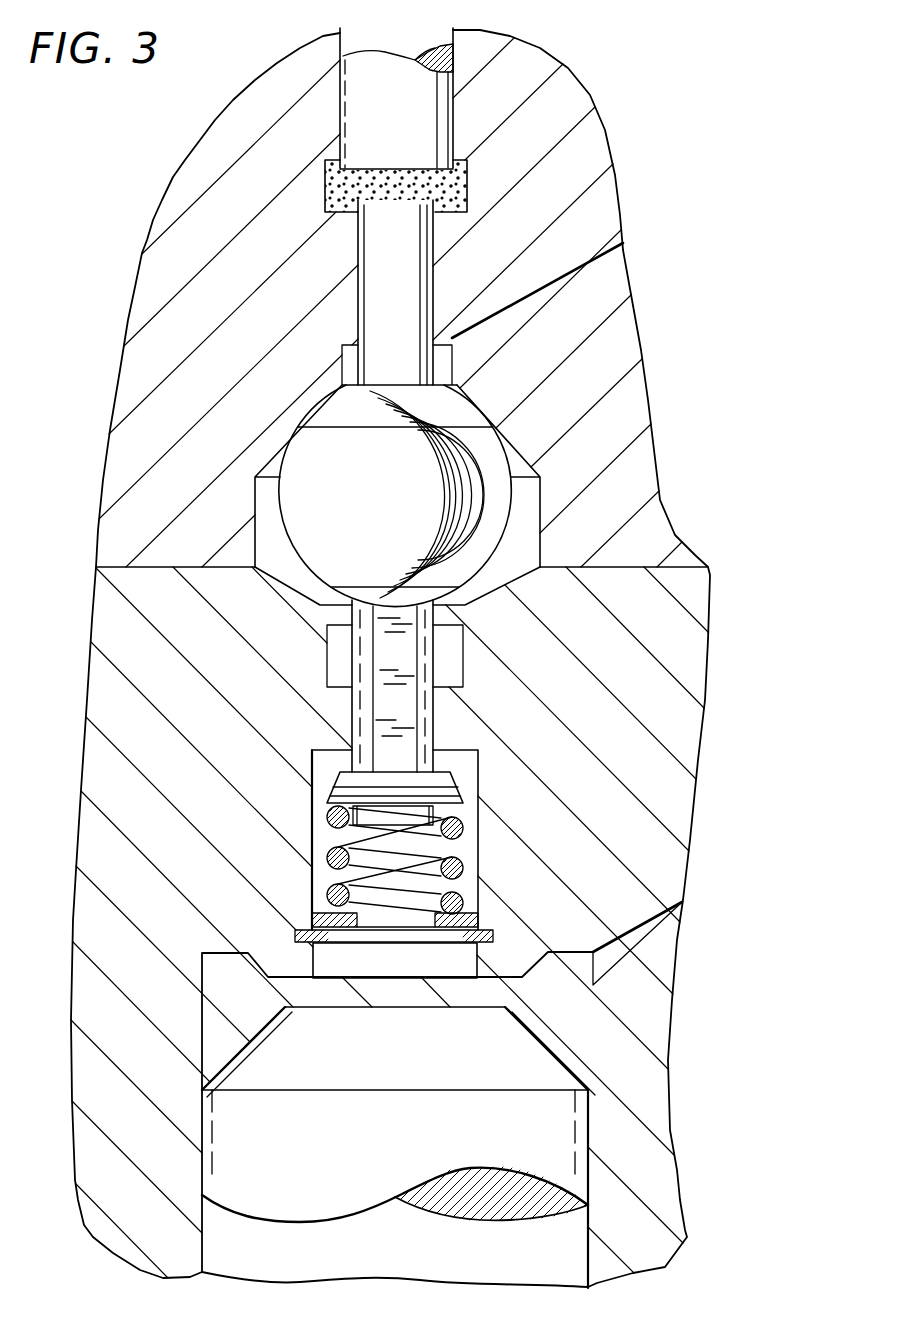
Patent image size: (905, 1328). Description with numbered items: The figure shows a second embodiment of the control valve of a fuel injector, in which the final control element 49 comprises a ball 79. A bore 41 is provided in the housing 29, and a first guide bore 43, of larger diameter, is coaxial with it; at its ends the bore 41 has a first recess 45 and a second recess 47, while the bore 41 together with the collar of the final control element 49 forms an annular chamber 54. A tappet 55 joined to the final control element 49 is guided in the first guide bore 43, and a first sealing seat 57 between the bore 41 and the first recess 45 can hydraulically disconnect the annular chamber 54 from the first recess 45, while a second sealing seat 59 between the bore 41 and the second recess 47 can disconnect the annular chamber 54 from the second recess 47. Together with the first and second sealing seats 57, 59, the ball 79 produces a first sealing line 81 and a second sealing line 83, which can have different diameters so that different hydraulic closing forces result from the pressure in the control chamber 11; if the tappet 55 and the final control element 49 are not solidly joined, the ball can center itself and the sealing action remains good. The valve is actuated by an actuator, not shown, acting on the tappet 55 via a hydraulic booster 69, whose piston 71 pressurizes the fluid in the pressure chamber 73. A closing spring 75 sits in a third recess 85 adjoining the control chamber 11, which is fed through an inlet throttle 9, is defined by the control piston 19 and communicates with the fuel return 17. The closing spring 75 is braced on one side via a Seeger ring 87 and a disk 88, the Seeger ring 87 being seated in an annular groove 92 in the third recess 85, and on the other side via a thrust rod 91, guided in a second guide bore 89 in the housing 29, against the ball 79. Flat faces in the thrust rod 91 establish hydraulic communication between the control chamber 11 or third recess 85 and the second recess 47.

The inlet throttle 9 is at (640, 945).
The control chamber 11 is at (560, 1027).
The fuel return 17 is at (600, 287).
The control piston 19 is at (543, 1153).
The housing 29 is at (623, 347).
The bore 41 is at (550, 447).
The first guide bore 43 is at (420, 245).
The first recess 45 is at (348, 353).
The second recess 47 is at (340, 662).
The final control element 49 is at (185, 515).
The annular chamber 54 is at (600, 540).
The tappet 55 is at (410, 293).
The first sealing seat 57 is at (498, 435).
The second sealing seat 59 is at (490, 612).
The hydraulic booster 69 is at (232, 205).
The piston 71 is at (430, 118).
The pressure chamber 73 is at (452, 187).
The closing spring 75 is at (455, 862).
The ball 79 is at (462, 522).
The first sealing line 81 is at (430, 422).
The second sealing line 83 is at (460, 588).
The third recess 85 is at (463, 768).
The Seeger ring 87 is at (493, 933).
The disk 88 is at (470, 908).
The second guide bore 89 is at (363, 715).
The thrust rod 91 is at (427, 723).
The annular groove 92 is at (300, 935).